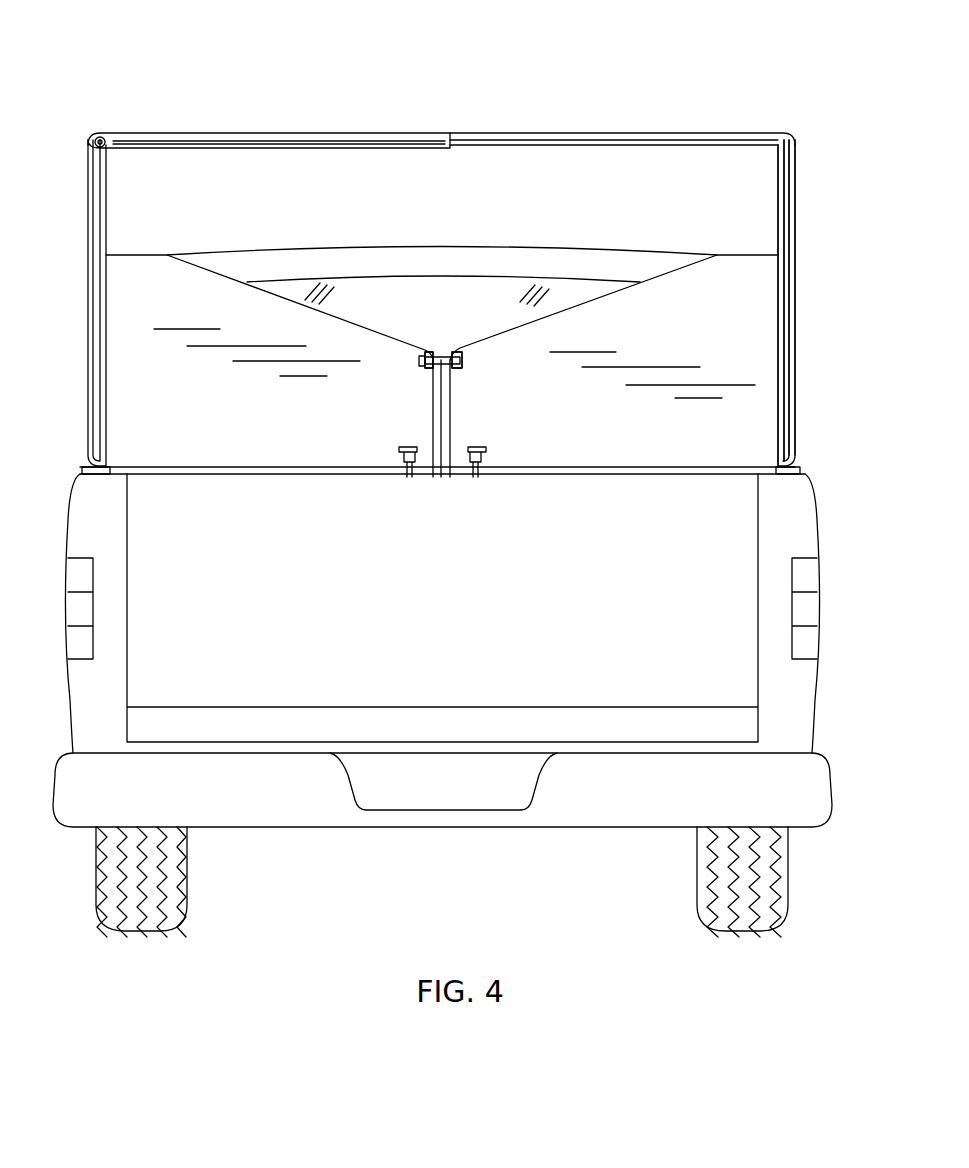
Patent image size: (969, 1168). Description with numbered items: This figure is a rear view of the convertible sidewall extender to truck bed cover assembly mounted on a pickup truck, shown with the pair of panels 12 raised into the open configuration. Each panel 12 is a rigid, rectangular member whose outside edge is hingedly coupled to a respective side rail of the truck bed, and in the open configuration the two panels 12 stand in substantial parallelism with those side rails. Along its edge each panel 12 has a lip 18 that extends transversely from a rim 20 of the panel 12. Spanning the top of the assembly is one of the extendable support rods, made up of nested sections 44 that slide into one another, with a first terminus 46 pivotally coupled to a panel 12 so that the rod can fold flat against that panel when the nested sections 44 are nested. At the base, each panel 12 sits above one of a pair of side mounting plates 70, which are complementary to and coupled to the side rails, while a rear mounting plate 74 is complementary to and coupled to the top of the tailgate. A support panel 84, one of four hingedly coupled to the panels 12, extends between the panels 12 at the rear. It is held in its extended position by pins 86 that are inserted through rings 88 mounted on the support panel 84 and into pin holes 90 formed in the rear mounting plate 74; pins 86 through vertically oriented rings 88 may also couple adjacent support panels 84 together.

The panel 12 is at (88, 300).
The lip 18 is at (786, 127).
The rim 20 is at (798, 133).
The nested sections 44 is at (405, 132).
The first terminus 46 is at (102, 130).
The side mounting plate 70 is at (86, 464).
The rear mounting plate 74 is at (315, 470).
The support panel 84 is at (510, 357).
The pin 86 is at (462, 369).
The ring 88 is at (423, 369).
The pin hole 90 is at (413, 476).